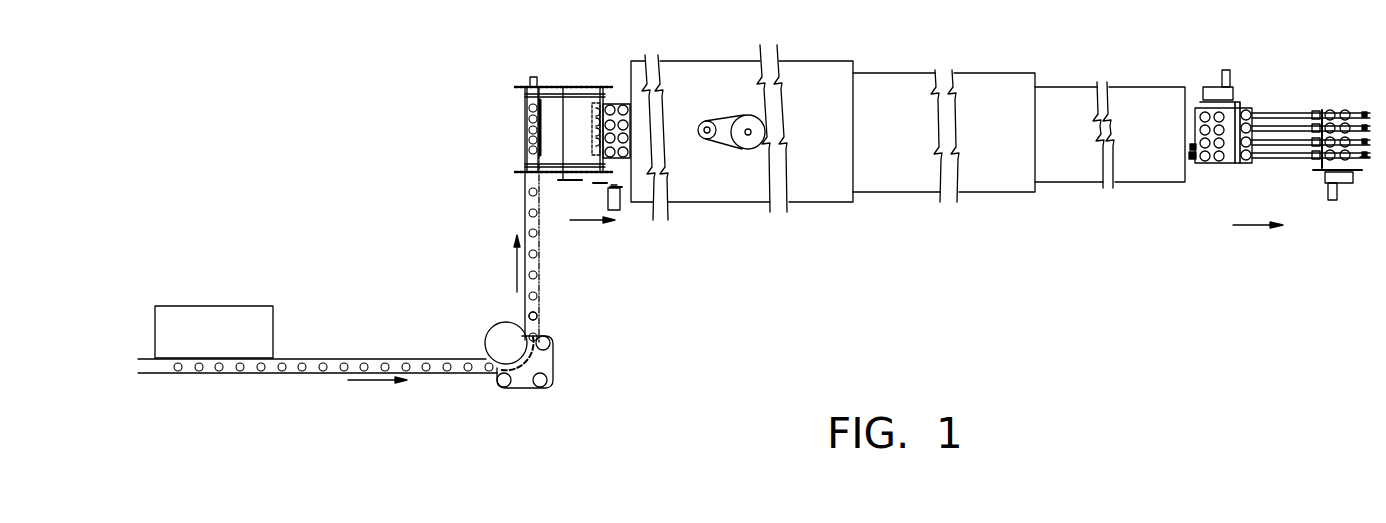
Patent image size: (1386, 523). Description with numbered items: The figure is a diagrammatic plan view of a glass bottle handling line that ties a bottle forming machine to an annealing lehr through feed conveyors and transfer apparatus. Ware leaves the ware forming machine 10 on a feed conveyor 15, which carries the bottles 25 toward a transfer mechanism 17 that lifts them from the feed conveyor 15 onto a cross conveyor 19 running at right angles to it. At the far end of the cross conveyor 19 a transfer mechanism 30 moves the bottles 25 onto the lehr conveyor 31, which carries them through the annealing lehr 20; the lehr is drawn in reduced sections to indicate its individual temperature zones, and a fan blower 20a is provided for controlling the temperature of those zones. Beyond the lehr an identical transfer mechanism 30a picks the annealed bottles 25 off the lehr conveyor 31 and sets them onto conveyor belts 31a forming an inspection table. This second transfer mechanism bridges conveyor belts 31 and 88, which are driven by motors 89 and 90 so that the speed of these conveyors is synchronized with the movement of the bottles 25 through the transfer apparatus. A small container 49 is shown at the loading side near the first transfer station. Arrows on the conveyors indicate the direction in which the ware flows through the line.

The ware forming machine 10 is at (198, 306).
The feed conveyor 15 is at (351, 359).
The transfer mechanism 17 is at (548, 364).
The cross conveyor 19 is at (542, 262).
The annealing lehr 20 is at (1012, 193).
The fan blower 20a is at (738, 141).
The bottles 25 is at (537, 315).
The transfer mechanism 30 is at (591, 87).
The transfer mechanism 30a is at (1252, 112).
The lehr conveyor 31 is at (622, 104).
The conveyor belts 31a is at (1332, 110).
The container 49 is at (621, 213).
The conveyor belt 88 is at (1371, 158).
The motor 89 is at (1231, 70).
The motor 90 is at (1330, 202).